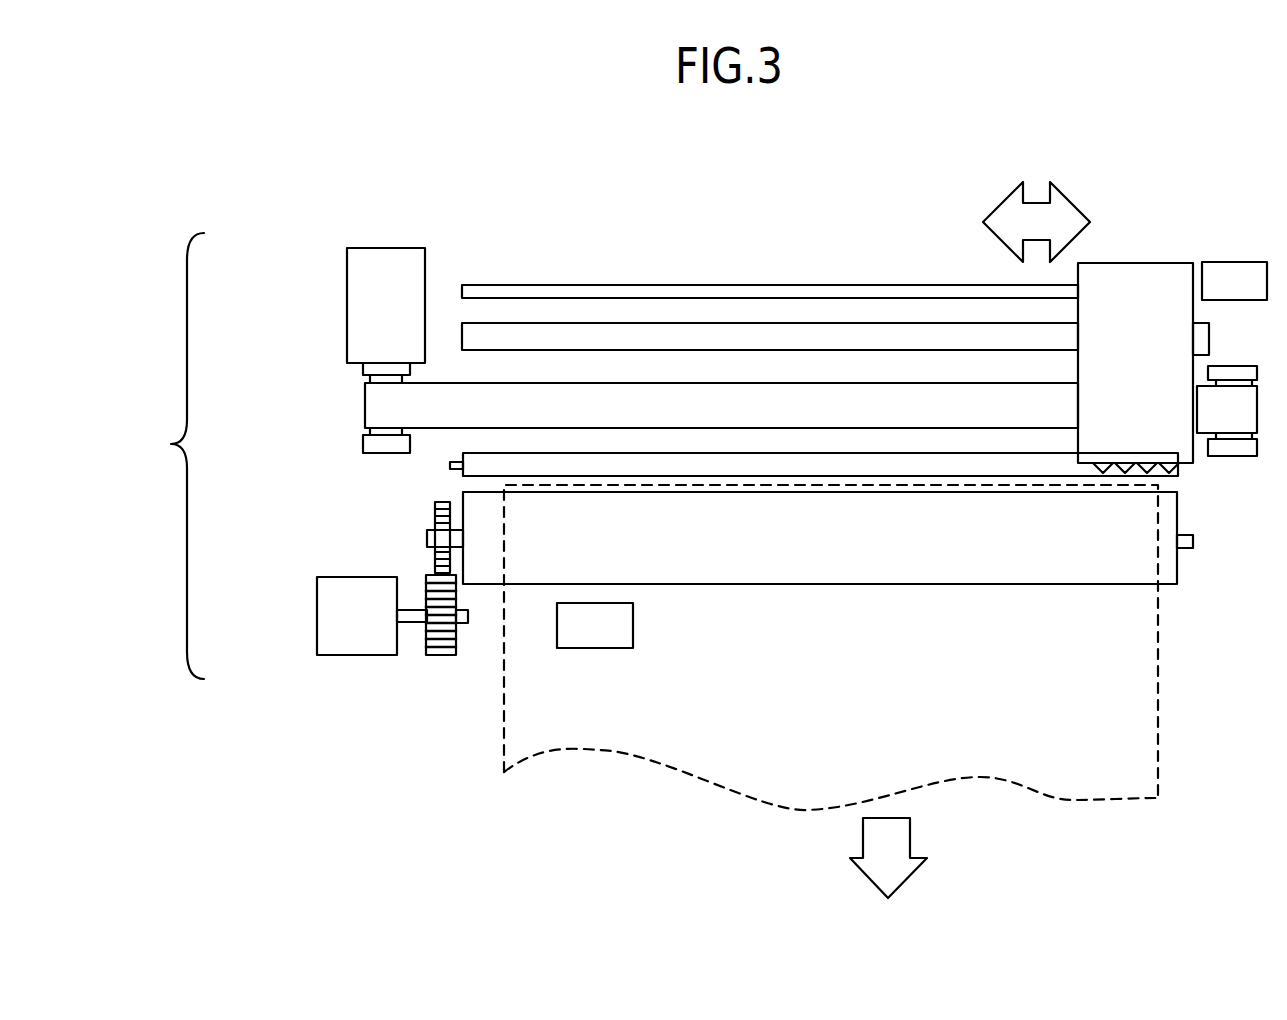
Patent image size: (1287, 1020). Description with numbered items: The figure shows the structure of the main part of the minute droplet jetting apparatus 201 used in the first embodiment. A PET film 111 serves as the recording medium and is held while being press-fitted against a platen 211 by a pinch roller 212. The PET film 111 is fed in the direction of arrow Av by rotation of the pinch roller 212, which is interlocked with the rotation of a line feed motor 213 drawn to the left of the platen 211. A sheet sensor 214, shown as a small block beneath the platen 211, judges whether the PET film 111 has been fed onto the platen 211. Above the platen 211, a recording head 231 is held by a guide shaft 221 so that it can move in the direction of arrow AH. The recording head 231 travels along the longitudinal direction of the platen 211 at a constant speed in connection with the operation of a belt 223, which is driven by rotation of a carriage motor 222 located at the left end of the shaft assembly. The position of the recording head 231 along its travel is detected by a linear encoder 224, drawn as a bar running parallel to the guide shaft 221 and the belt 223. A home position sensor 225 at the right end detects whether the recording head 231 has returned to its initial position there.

The PET film 111 is at (693, 753).
The minute droplet jetting apparatus 201 is at (163, 456).
The platen 211 is at (1147, 568).
The pinch roller 212 is at (450, 466).
The line feed motor 213 is at (326, 603).
The sheet sensor 214 is at (565, 637).
The guide shaft 221 is at (723, 333).
The carriage motor 222 is at (382, 254).
The belt 223 is at (833, 397).
The linear encoder 224 is at (630, 288).
The home position sensor 225 is at (1235, 262).
The recording head 231 is at (1188, 457).
The arrow AH is at (1063, 202).
The arrow Av AV is at (870, 873).